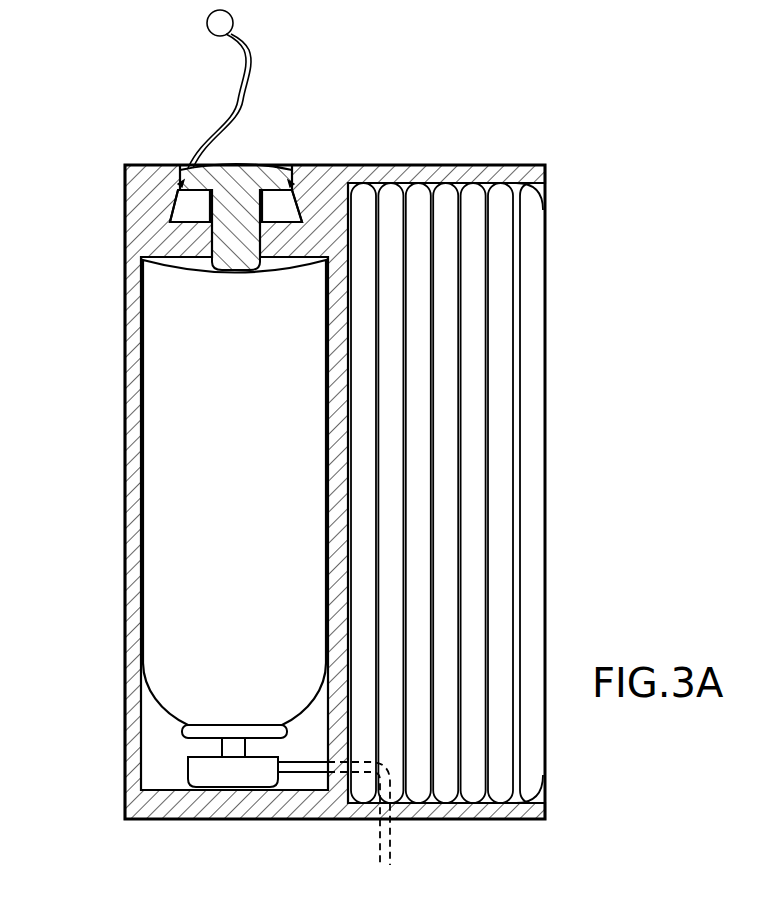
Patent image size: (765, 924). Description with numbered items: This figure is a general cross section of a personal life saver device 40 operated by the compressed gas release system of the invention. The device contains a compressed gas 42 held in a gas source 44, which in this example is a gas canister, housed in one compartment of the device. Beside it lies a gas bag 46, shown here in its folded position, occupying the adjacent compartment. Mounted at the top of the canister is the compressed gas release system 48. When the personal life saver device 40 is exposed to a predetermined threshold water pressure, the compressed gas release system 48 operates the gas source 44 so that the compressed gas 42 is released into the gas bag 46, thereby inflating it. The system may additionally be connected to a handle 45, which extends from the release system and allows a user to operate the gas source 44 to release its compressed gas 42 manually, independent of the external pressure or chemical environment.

The personal life saver device 40 is at (597, 141).
The compressed gas 42 is at (173, 518).
The gas source 44 is at (140, 427).
The handle 45 is at (243, 97).
The gas bag 46 is at (490, 368).
The compressed gas release system 48 is at (250, 167).